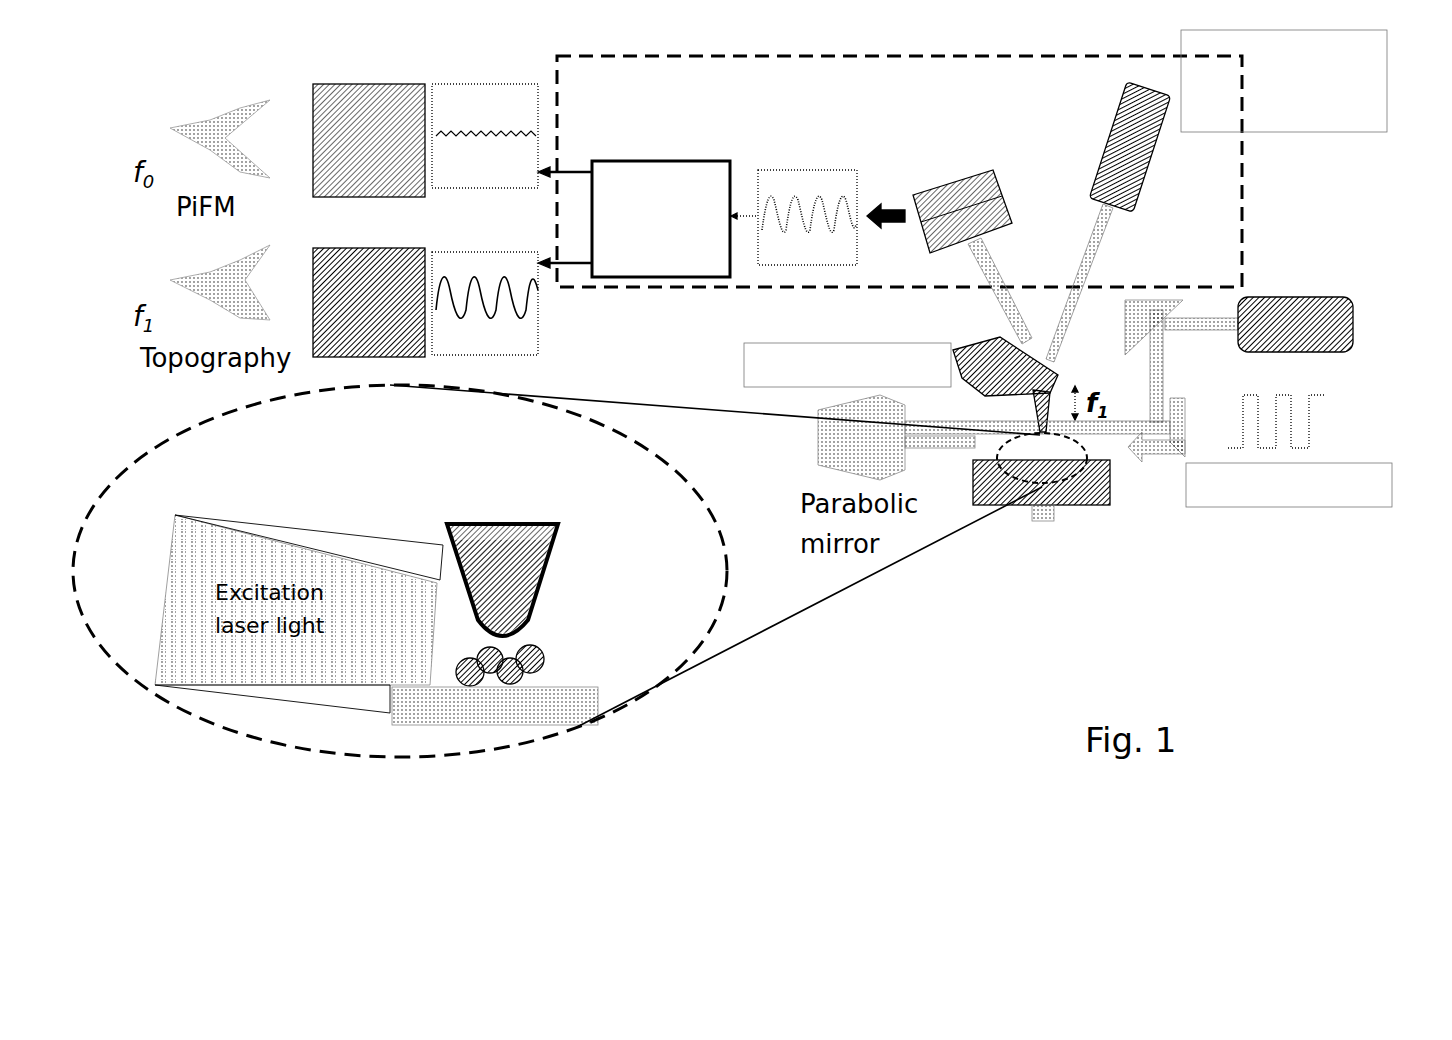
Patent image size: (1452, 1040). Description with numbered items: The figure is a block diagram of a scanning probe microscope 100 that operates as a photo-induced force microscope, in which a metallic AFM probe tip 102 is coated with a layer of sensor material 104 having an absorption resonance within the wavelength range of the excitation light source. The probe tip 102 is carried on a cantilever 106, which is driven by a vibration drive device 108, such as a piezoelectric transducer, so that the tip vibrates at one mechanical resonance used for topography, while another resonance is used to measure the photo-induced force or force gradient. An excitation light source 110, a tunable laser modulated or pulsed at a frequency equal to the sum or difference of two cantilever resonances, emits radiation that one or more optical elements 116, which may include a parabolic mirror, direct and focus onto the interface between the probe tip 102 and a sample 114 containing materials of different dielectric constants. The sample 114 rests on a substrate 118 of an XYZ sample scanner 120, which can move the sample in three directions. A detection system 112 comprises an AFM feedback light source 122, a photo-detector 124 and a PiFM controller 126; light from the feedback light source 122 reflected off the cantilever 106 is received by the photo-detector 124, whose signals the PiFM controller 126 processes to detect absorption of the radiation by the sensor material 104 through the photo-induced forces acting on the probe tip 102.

The scanning probe microscope 100 is at (1342, 112).
The metallic AFM probe tip 102 is at (1058, 418).
The sensor material 104 is at (544, 576).
The cantilever 106 is at (1033, 400).
The vibration drive device 108 is at (985, 342).
The excitation light source 110 is at (1352, 316).
The detection system 112 is at (999, 101).
The sample 114 is at (544, 664).
The optical elements 116 is at (1132, 350).
The substrate 118 is at (598, 705).
The XYZ sample scanner 120 is at (1068, 503).
The AFM feedback light source 122 is at (1150, 161).
The photo-detector 124 is at (952, 186).
The PiFM controller 126 is at (633, 160).